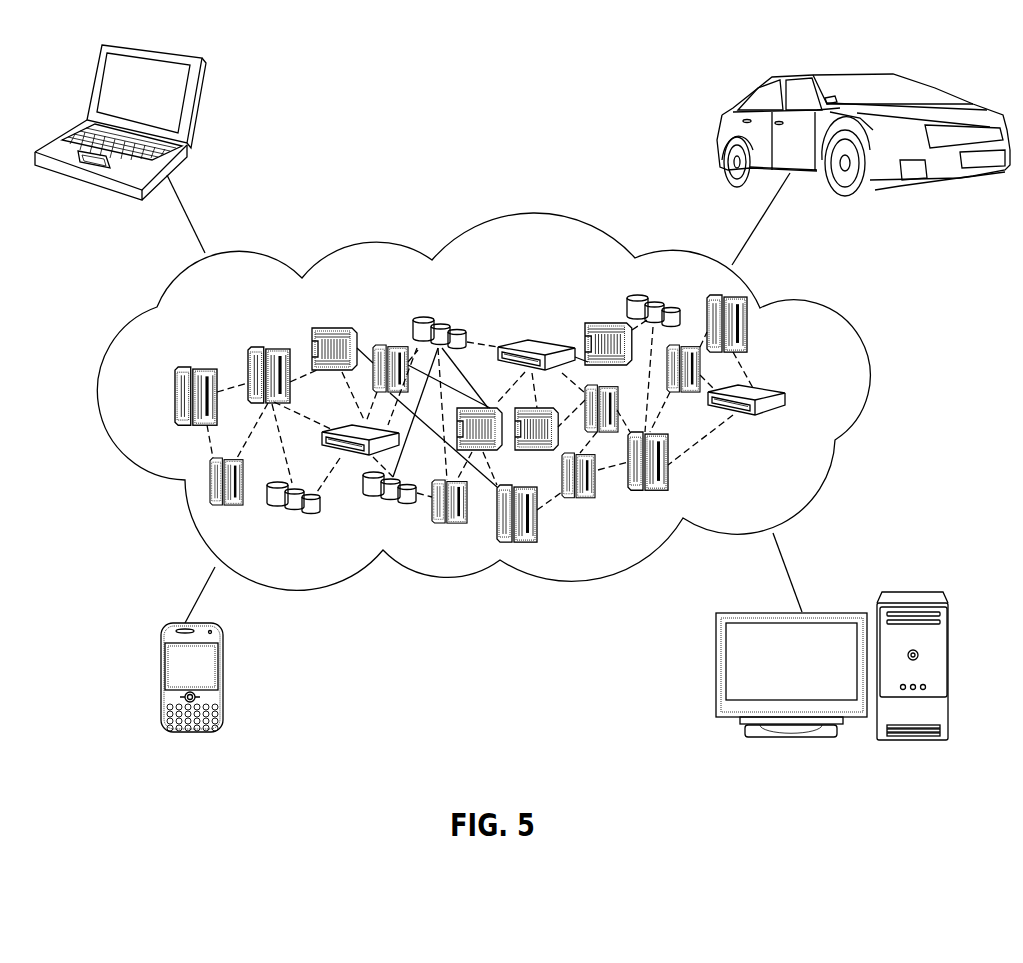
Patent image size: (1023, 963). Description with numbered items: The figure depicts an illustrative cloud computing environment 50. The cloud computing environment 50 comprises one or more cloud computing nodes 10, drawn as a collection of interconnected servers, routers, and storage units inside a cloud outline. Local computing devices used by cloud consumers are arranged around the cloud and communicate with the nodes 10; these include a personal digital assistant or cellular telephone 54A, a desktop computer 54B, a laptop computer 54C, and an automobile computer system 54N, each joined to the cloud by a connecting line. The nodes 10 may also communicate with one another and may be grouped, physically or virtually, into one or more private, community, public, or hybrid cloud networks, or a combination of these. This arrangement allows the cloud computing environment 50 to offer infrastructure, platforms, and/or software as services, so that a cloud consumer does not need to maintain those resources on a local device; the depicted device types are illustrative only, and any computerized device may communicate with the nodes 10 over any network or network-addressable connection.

The cloud computing nodes 10 is at (822, 397).
The cloud computing environment 50 is at (842, 317).
The personal digital assistant (PDA) or cellular telephone 54A is at (161, 682).
The desktop computer 54B is at (917, 590).
The laptop computer 54C is at (197, 108).
The automobile computer system 54N is at (723, 115).